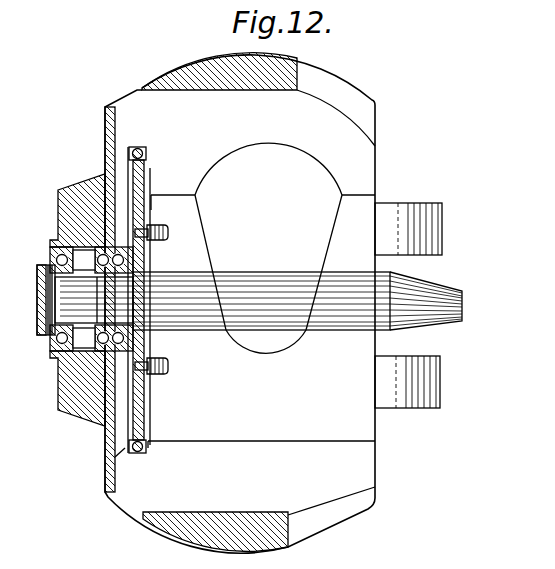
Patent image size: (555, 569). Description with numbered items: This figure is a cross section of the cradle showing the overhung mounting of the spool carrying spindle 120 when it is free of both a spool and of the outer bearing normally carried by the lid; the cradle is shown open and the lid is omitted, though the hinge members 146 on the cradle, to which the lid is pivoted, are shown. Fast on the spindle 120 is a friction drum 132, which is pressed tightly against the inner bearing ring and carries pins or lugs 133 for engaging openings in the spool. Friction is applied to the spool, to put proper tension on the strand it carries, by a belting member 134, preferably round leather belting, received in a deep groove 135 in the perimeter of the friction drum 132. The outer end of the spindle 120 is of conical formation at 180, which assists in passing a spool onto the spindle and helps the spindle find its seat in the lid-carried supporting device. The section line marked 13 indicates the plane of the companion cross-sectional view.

The section line 13- 13 is at (155, 68).
The spool carrying spindle 120 is at (235, 292).
The friction drum 132 is at (143, 408).
The pins or lugs 133 is at (167, 366).
The belting member 134 is at (142, 148).
The deep groove 135 is at (138, 451).
The hinge members 146 is at (440, 385).
The conical formation 180 is at (417, 295).